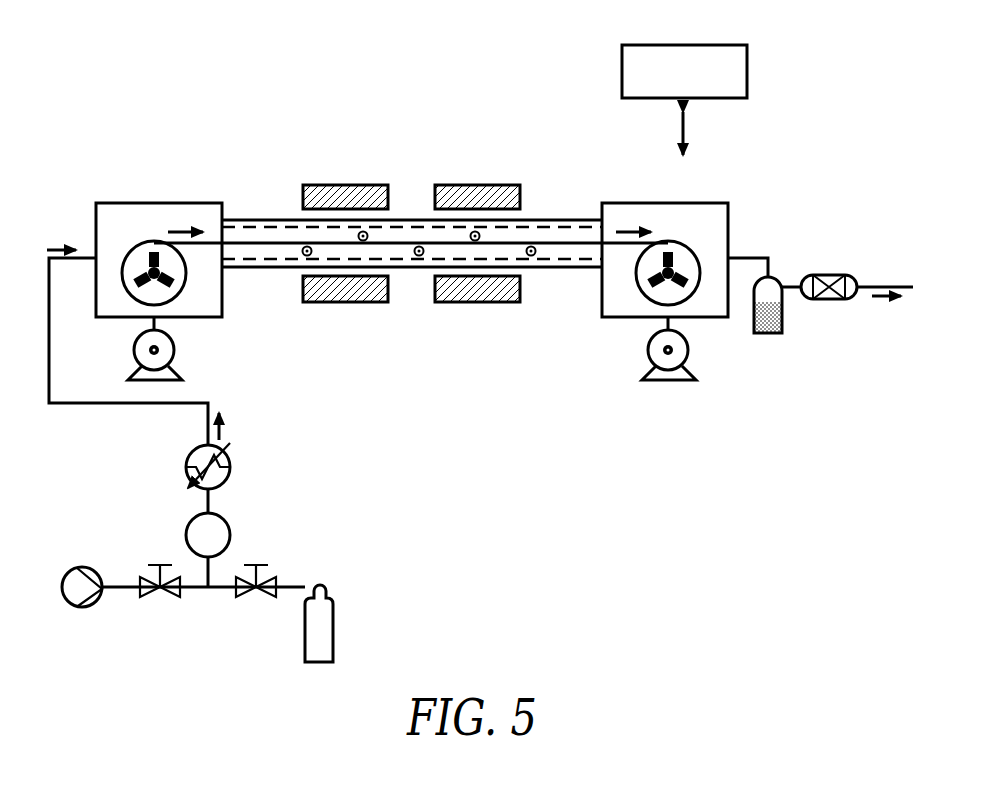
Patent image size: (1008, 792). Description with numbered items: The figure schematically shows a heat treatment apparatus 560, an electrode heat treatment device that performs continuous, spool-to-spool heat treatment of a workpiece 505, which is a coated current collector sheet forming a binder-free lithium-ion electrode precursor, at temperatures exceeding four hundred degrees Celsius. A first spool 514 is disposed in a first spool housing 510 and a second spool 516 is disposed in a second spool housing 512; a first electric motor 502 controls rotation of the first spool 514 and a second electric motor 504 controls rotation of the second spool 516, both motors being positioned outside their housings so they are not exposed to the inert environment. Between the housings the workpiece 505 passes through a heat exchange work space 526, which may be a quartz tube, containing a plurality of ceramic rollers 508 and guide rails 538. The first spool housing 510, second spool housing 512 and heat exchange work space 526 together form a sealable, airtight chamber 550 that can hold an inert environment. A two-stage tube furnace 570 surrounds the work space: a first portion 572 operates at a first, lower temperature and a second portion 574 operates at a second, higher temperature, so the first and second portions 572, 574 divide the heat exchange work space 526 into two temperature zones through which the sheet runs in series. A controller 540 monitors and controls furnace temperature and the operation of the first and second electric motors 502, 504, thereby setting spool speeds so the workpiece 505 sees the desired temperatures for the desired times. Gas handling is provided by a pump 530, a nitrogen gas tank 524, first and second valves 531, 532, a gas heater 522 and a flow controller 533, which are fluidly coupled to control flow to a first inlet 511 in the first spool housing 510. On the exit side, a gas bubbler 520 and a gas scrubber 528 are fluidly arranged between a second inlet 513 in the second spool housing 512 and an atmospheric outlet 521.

The heat treatment apparatus 560 is at (203, 72).
The two-stage tube furnace 570 is at (430, 112).
The first spool housing 510 is at (170, 196).
The first spool 514 is at (146, 241).
The first inlet 511 is at (93, 253).
The guide rails 538 is at (271, 250).
The sealable chamber 550 is at (537, 210).
The heat exchange work space 526 is at (567, 220).
The first portion of the tube furnace 572 is at (358, 185).
The second portion of the tube furnace 574 is at (480, 185).
The ceramic rollers 508 is at (416, 264).
The workpiece 505 is at (563, 254).
The second spool housing 512 is at (696, 202).
The second spool 516 is at (689, 245).
The controller 540 is at (684, 100).
The second inlet 513 is at (730, 257).
The gas bubbler 520 is at (783, 309).
The gas scrubber 528 is at (828, 275).
The atmospheric outlet 521 is at (873, 287).
The first electric motor 502 is at (175, 351).
The second electric motor 504 is at (689, 351).
The gas heater 522 is at (190, 452).
The flow controller 533 is at (188, 525).
The pump 530 is at (70, 569).
The vacuum pump 532 is at (150, 598).
The first valve 531 is at (248, 598).
The nitrogen gas tank 524 is at (330, 580).